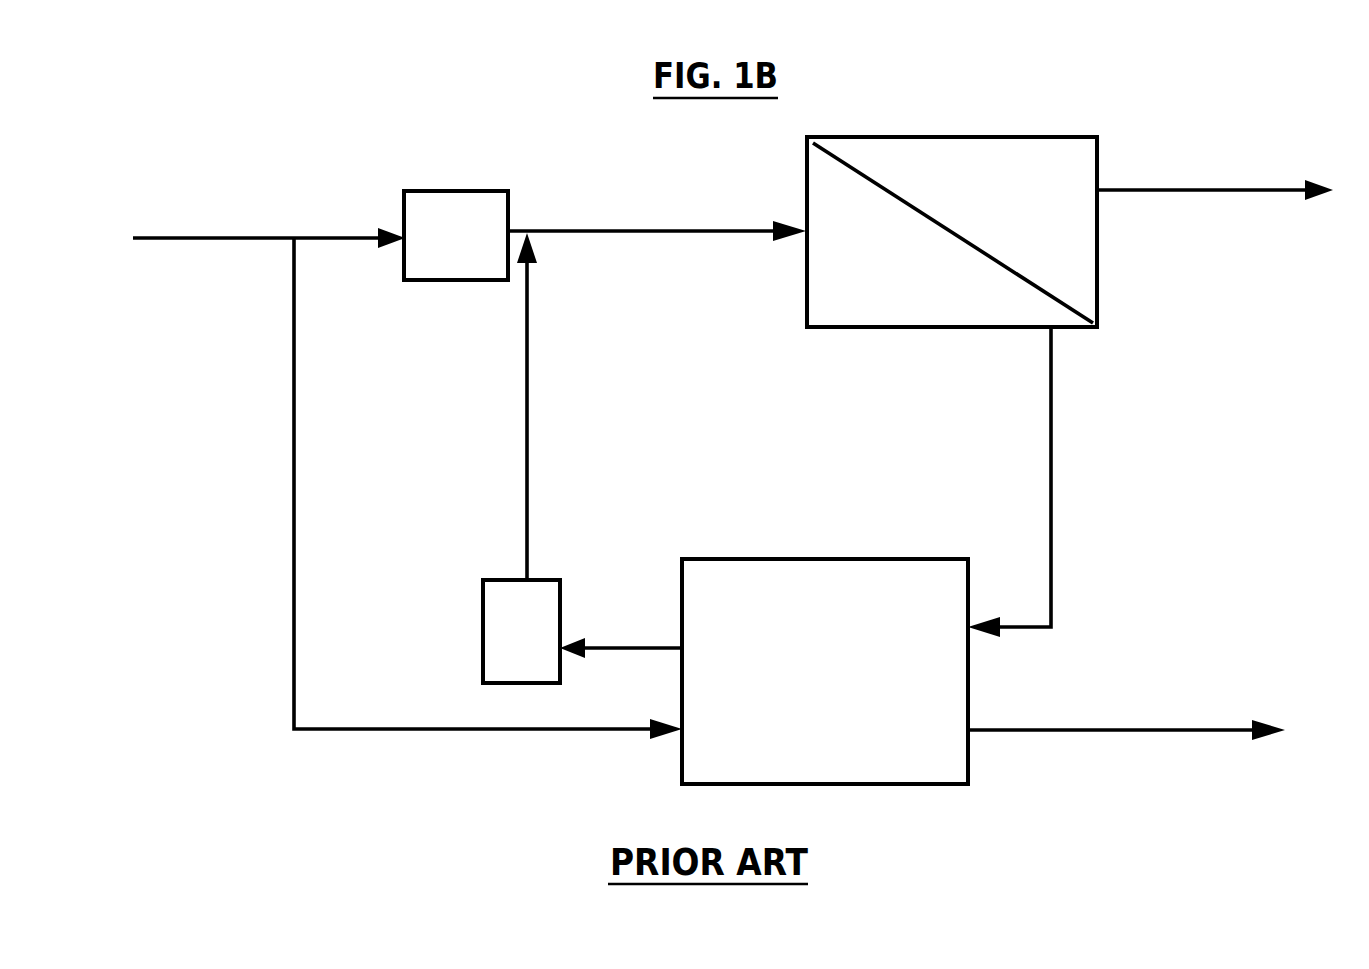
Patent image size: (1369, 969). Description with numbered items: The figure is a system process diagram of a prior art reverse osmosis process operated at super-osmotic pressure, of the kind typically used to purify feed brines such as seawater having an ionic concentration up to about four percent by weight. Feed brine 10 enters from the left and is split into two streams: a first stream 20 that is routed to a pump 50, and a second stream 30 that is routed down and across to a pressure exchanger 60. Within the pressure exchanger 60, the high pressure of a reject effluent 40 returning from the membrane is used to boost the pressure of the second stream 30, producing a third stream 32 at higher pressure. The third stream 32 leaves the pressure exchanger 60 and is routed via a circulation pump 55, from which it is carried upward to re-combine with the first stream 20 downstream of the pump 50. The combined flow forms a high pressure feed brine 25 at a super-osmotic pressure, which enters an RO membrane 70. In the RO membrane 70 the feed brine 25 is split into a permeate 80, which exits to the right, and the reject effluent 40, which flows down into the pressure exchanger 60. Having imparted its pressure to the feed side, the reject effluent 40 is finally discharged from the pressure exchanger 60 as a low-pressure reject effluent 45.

The feed brine 10 is at (223, 237).
The first stream 20 is at (349, 237).
The high pressure feed brine 25 is at (693, 228).
The second stream 30 is at (295, 392).
The third stream 32 is at (618, 647).
The reject effluent 40 is at (1050, 392).
The low-pressure reject effluent 45 is at (1200, 731).
The pump 50 is at (456, 235).
The circulation pump 55 is at (521, 458).
The pressure exchanger 60 is at (825, 671).
The RO membrane 70 is at (952, 232).
The permeate 80 is at (1232, 190).